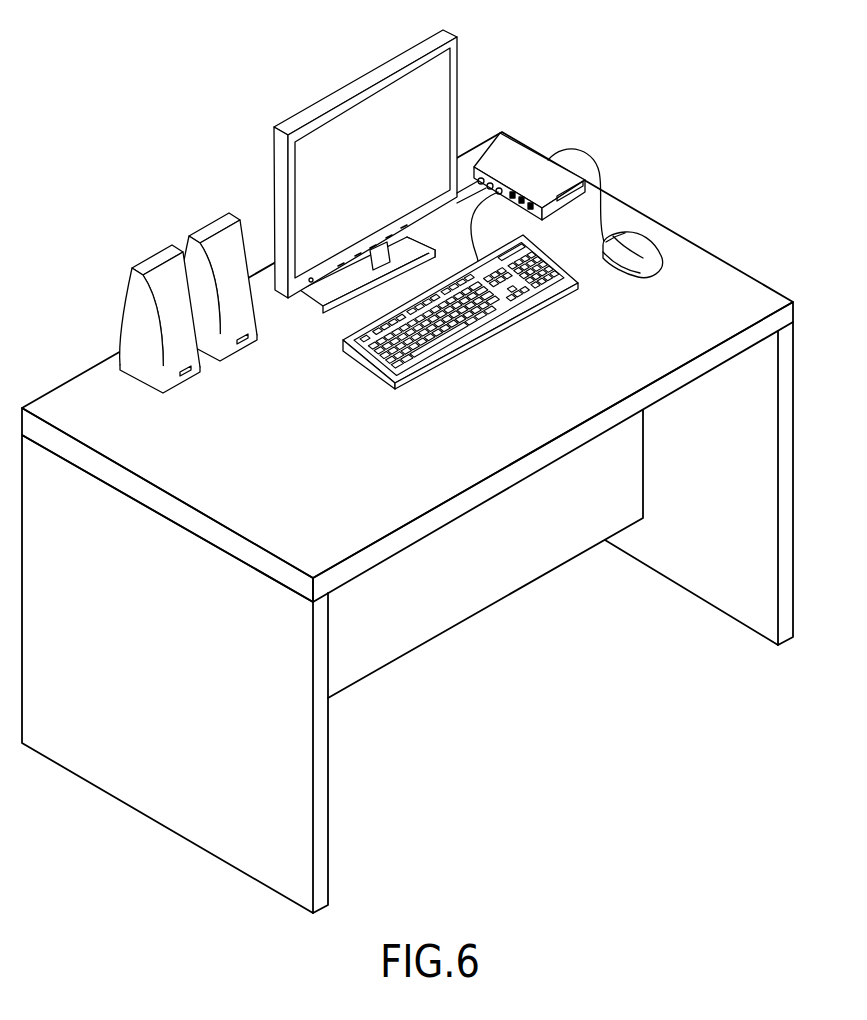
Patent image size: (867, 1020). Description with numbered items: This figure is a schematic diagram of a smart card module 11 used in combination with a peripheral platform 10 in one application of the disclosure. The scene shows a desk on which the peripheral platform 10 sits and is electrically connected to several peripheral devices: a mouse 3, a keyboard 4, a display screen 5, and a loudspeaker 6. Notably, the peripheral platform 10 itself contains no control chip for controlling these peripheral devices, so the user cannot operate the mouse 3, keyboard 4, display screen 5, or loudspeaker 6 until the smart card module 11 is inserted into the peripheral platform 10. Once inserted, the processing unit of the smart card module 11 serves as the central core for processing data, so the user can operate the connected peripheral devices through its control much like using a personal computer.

The mouse 3 is at (645, 255).
The keyboard 4 is at (508, 329).
The display screen 5 is at (350, 92).
The loudspeaker 6 is at (162, 258).
The peripheral platform 10 is at (528, 146).
The smart card module 11 is at (573, 217).